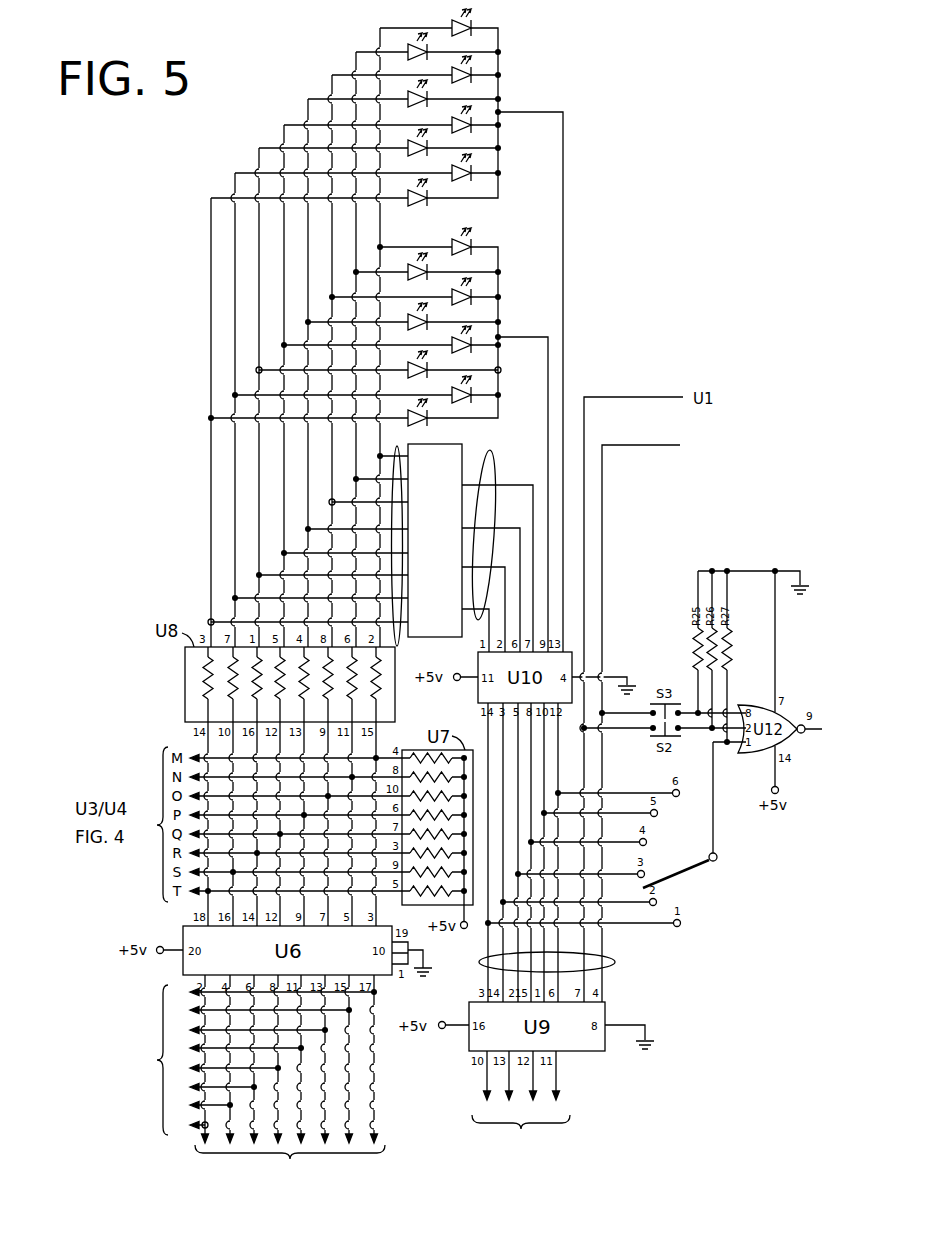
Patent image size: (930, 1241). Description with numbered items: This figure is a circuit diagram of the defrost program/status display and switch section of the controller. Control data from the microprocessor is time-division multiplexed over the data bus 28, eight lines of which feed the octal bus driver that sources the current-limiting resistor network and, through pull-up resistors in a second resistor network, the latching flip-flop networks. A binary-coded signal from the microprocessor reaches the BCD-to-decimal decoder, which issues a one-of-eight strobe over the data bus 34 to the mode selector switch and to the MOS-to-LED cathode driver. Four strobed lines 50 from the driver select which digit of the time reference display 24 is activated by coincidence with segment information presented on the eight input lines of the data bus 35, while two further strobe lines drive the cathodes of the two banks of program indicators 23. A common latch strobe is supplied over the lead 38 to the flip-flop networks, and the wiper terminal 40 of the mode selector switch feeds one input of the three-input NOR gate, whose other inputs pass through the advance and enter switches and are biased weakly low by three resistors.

The program indicators 23 is at (500, 207).
The time reference display 24 is at (468, 452).
The data bus 28 is at (310, 1098).
The data bus 34 is at (615, 962).
The data bus 35 is at (400, 642).
The lead 38 is at (646, 445).
The wiper terminal 40 is at (692, 864).
The strobed lines 50 is at (490, 452).